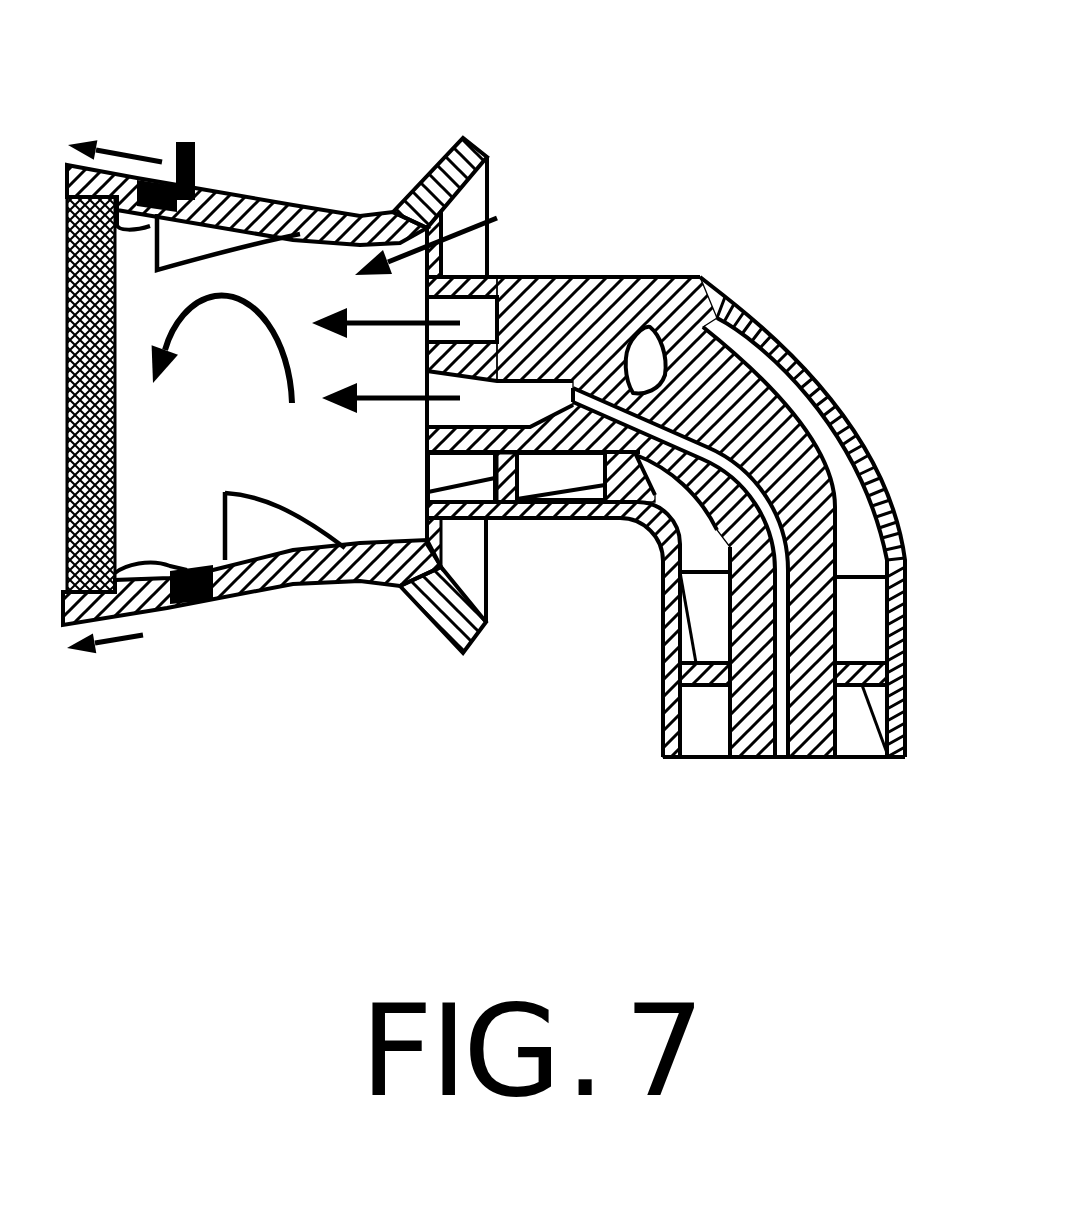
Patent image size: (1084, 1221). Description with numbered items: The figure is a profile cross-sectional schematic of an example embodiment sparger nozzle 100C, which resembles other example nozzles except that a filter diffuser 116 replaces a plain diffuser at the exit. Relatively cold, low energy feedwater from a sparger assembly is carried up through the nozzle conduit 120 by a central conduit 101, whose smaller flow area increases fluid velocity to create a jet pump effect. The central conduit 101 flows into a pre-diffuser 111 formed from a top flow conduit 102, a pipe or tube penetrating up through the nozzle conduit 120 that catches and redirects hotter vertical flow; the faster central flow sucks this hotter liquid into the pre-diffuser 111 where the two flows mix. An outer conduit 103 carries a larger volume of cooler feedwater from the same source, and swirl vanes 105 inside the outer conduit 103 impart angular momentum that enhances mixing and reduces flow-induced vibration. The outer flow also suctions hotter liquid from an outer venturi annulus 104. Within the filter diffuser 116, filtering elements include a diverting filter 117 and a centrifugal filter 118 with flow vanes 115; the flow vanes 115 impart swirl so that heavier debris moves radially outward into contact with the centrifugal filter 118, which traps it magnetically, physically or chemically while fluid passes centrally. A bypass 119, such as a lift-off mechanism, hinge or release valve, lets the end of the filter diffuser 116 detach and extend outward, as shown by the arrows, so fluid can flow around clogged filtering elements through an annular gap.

The sparger nozzle 100C is at (296, 40).
The central conduit 101 is at (775, 757).
The top flow conduit 102 is at (645, 360).
The outer conduit 103 is at (706, 758).
The outer venturi annulus 104 is at (472, 572).
The swirl vanes 105 is at (750, 347).
The pre-diffuser 111 is at (527, 452).
The flow vanes 115 is at (212, 243).
The filter diffuser 116 is at (168, 605).
The diverting filter 117 is at (67, 217).
The centrifugal filter 118 is at (140, 572).
The bypass 119 is at (203, 140).
The nozzle conduit 120 is at (906, 700).